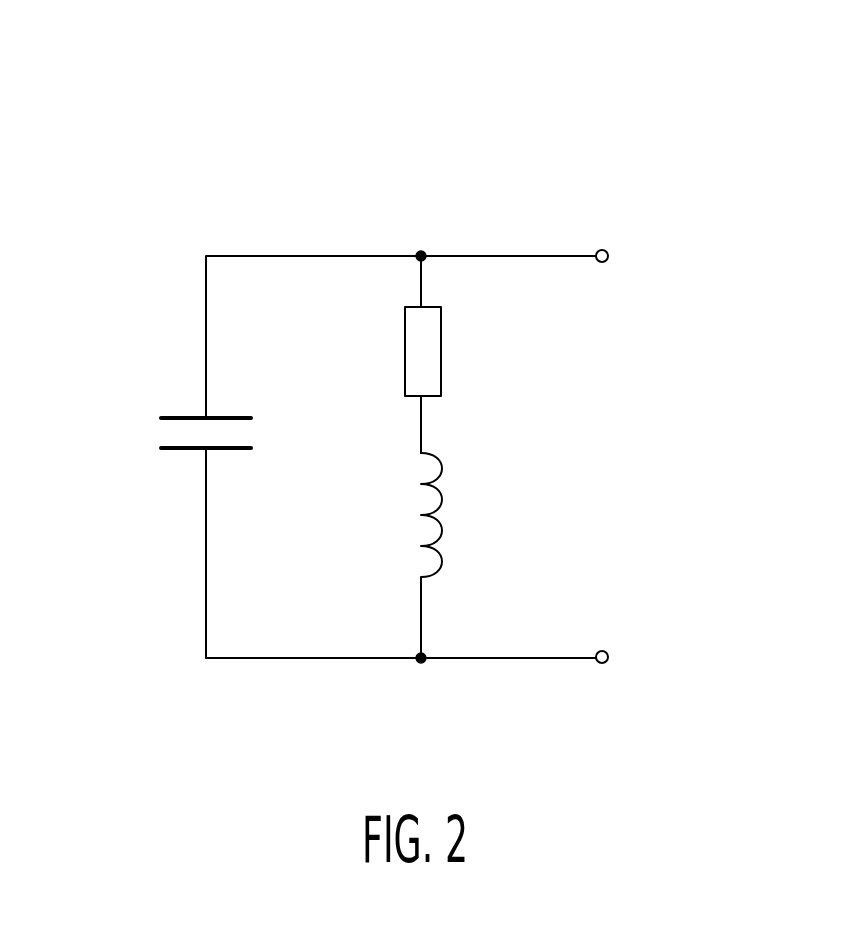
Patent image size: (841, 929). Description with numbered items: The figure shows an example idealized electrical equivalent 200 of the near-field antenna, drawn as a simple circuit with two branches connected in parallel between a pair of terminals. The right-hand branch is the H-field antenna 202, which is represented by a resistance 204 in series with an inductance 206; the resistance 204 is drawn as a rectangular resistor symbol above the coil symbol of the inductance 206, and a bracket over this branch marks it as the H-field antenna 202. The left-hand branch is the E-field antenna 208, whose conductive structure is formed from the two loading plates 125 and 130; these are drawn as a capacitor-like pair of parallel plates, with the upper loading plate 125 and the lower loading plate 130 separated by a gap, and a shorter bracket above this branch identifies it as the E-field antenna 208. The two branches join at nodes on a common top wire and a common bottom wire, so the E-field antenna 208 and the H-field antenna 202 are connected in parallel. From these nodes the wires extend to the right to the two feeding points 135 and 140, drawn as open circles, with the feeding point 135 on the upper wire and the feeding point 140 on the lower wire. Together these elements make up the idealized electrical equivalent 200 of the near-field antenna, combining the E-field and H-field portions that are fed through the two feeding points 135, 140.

The idealized electrical equivalent 200 is at (76, 96).
The E-field antenna 208 is at (250, 237).
The H-field antenna 202 is at (524, 237).
The loading plate 125 is at (238, 414).
The loading plate 130 is at (240, 452).
The resistance 204 is at (441, 348).
The inductance 206 is at (441, 498).
The feeding point 135 is at (608, 250).
The feeding point 140 is at (609, 660).